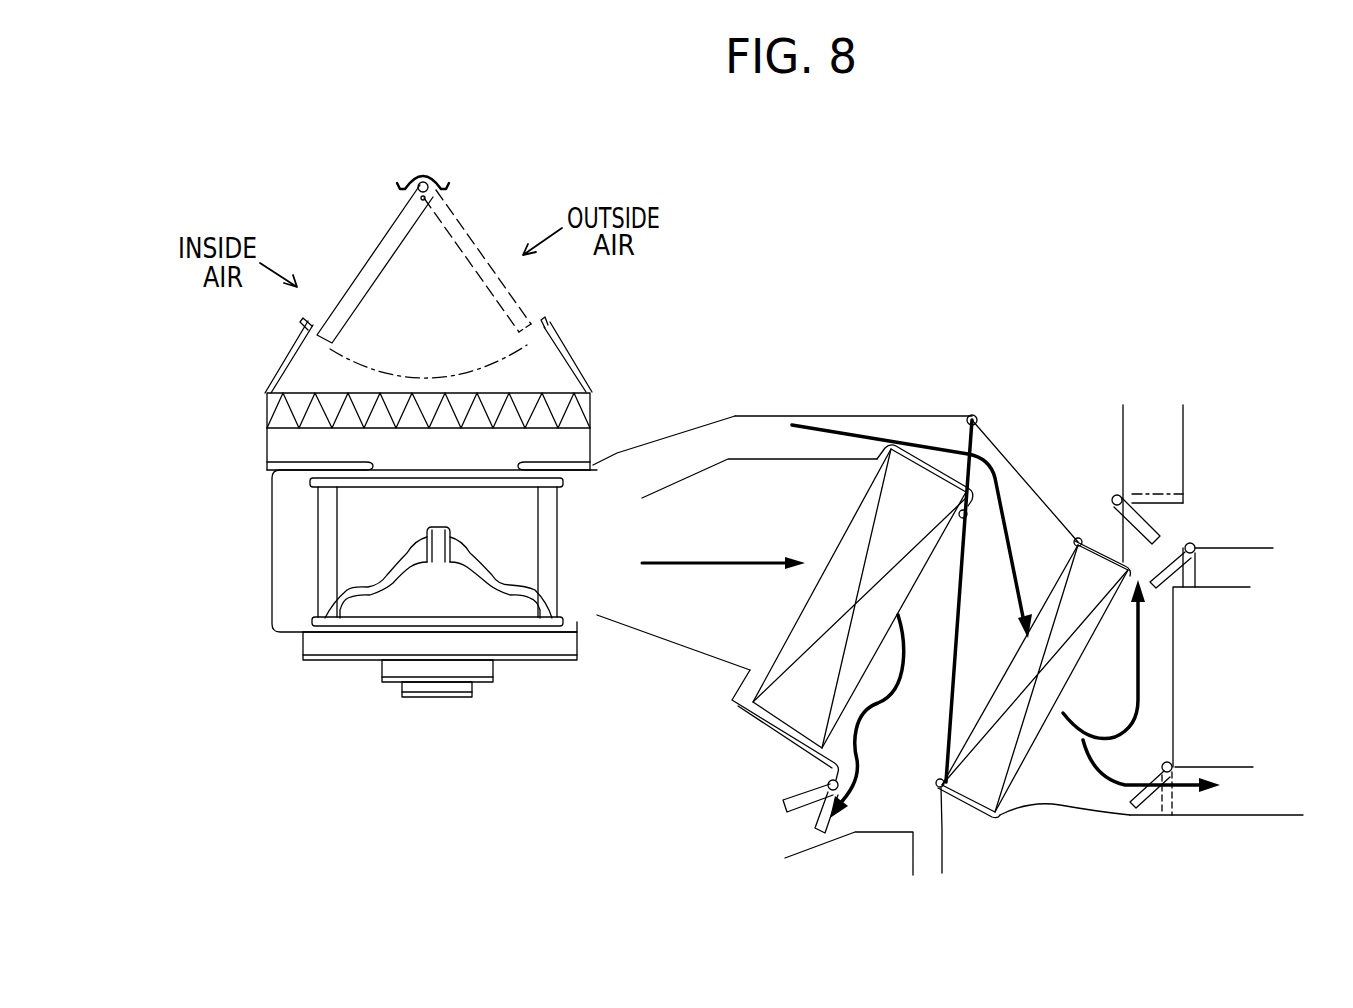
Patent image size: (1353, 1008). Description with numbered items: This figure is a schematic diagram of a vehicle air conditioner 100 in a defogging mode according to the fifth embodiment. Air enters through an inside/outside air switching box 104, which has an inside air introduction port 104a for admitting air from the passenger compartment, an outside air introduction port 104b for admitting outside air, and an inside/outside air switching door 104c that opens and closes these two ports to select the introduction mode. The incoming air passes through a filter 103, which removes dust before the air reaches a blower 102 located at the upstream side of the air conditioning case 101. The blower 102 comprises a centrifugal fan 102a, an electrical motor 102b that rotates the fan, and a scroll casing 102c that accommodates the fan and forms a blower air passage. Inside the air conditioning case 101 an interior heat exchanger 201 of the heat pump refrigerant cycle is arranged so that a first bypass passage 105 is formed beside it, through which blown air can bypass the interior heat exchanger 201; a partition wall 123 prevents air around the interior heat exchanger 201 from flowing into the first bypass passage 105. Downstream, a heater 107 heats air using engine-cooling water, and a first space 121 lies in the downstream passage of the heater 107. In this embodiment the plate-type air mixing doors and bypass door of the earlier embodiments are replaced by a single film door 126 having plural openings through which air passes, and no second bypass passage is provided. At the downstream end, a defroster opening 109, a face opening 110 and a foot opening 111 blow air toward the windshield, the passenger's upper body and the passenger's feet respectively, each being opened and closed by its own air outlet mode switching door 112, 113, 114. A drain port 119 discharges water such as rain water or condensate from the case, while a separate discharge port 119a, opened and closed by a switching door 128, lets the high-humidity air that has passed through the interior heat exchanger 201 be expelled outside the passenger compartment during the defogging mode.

The vehicle air conditioner 100 is at (838, 332).
The air conditioning case 101 is at (705, 422).
The blower 102 is at (333, 650).
The centrifugal fan 102a is at (552, 570).
The electrical motor 102b is at (493, 677).
The scroll casing 102c is at (272, 592).
The filter 103 is at (592, 393).
The inside/outside air switching box 104 is at (567, 353).
The inside air introduction port 104a is at (330, 242).
The outside air introduction port 104b is at (470, 200).
The inside/outside air switching door 104c is at (393, 208).
The first bypass passage 105 is at (936, 448).
The heater 107 is at (1000, 745).
The defroster opening 109 is at (1150, 477).
The face opening 110 is at (1237, 560).
The foot opening 111 is at (1200, 800).
The air outlet mode switching door 112 is at (1152, 520).
The air outlet mode switching door 113 is at (1197, 578).
The air outlet mode switching door 114 is at (1167, 813).
The drain port 119 is at (927, 870).
The discharge port 119a is at (790, 845).
The first space 121 is at (1150, 673).
The partition wall 123 is at (750, 462).
The film door 126 is at (950, 697).
The switching door 128 is at (783, 805).
The interior heat exchanger 201 is at (783, 805).